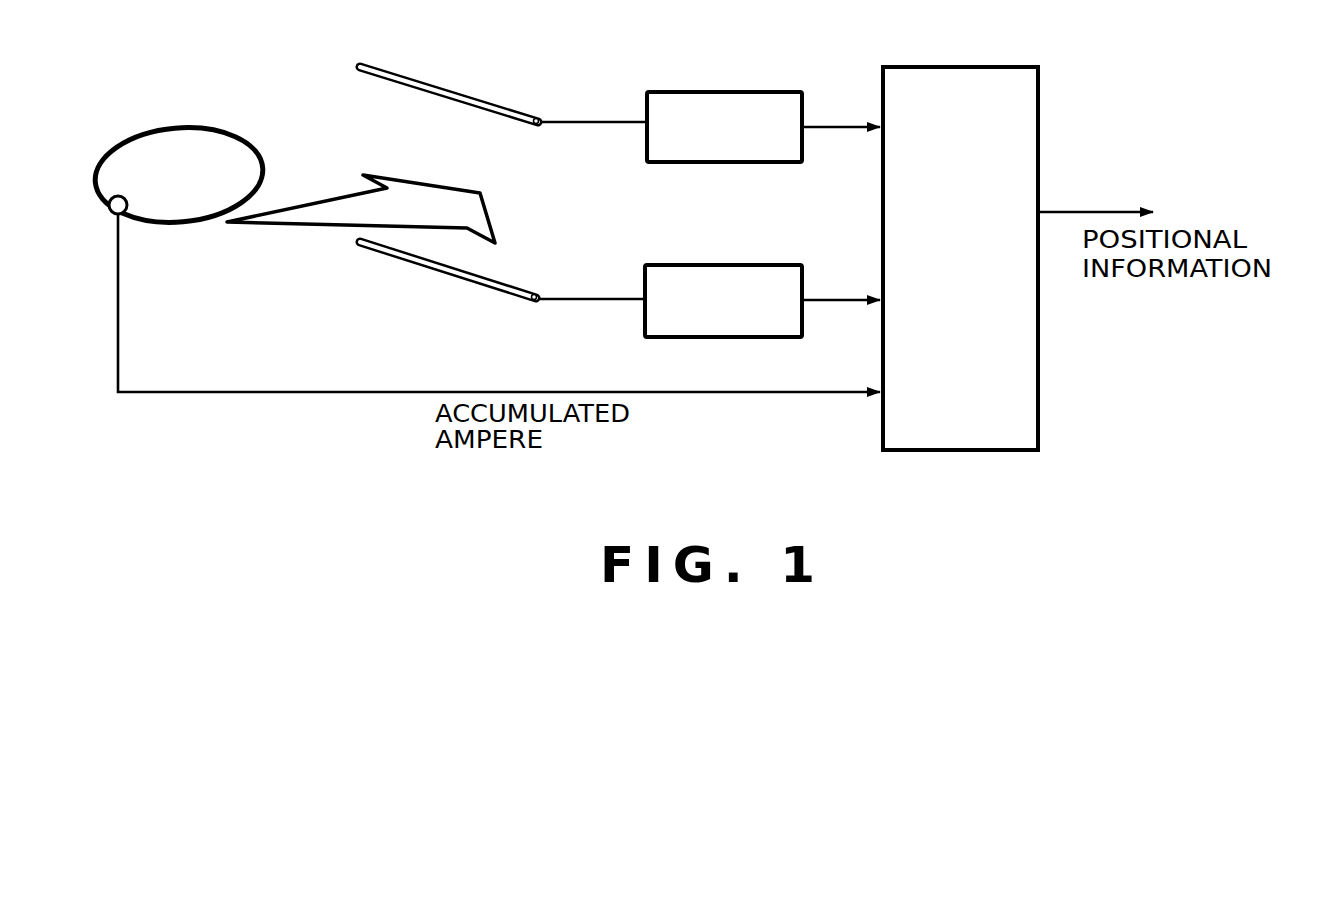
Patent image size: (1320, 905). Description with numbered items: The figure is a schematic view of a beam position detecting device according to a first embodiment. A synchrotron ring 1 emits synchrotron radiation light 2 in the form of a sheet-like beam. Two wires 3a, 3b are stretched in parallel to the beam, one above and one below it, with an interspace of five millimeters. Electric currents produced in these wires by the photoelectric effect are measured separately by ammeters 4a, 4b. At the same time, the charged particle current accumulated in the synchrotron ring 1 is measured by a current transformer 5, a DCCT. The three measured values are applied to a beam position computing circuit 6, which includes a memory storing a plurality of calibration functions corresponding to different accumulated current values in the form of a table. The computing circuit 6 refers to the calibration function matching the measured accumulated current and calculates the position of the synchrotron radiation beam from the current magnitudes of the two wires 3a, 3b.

The synchrotron ring 1 is at (210, 130).
The synchrotron radiation light 2 is at (308, 202).
The wire 3a is at (456, 90).
The wire 3b is at (504, 282).
The ammeter 4a is at (735, 92).
The ammeter 4b is at (734, 265).
The current transformer (DCCT) 5 is at (125, 212).
The beam position computing circuit 6 is at (976, 67).